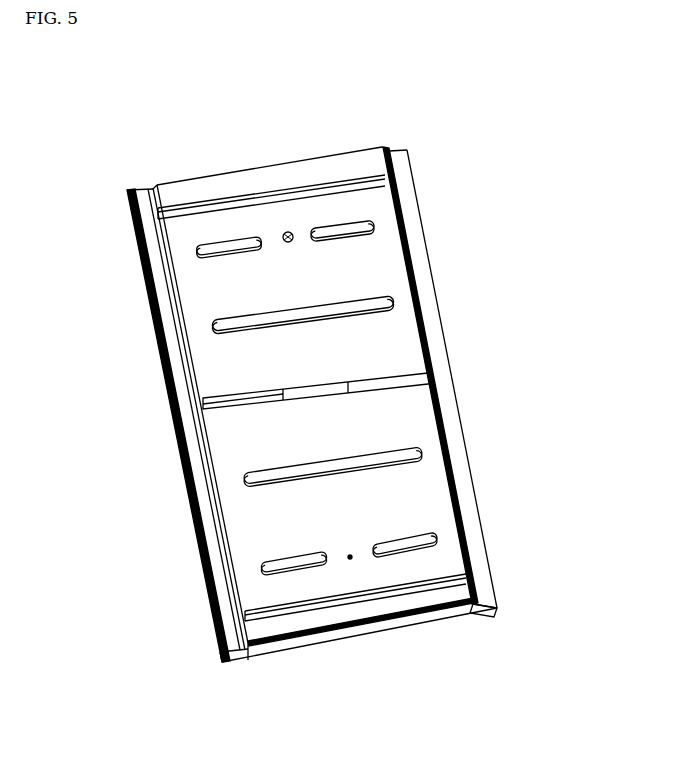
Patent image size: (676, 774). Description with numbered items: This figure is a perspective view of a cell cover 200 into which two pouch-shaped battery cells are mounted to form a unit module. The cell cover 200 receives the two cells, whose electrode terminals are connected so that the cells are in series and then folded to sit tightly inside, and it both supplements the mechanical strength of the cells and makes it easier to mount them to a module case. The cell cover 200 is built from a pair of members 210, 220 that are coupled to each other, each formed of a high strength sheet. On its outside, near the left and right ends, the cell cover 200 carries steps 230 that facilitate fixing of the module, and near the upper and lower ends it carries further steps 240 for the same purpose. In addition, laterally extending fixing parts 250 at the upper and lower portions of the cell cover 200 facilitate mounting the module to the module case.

The cell cover 200 is at (101, 135).
The member 210 is at (275, 643).
The member 220 is at (357, 643).
The steps 230 is at (202, 527).
The steps 240 is at (303, 174).
The fixing parts 250 is at (445, 573).